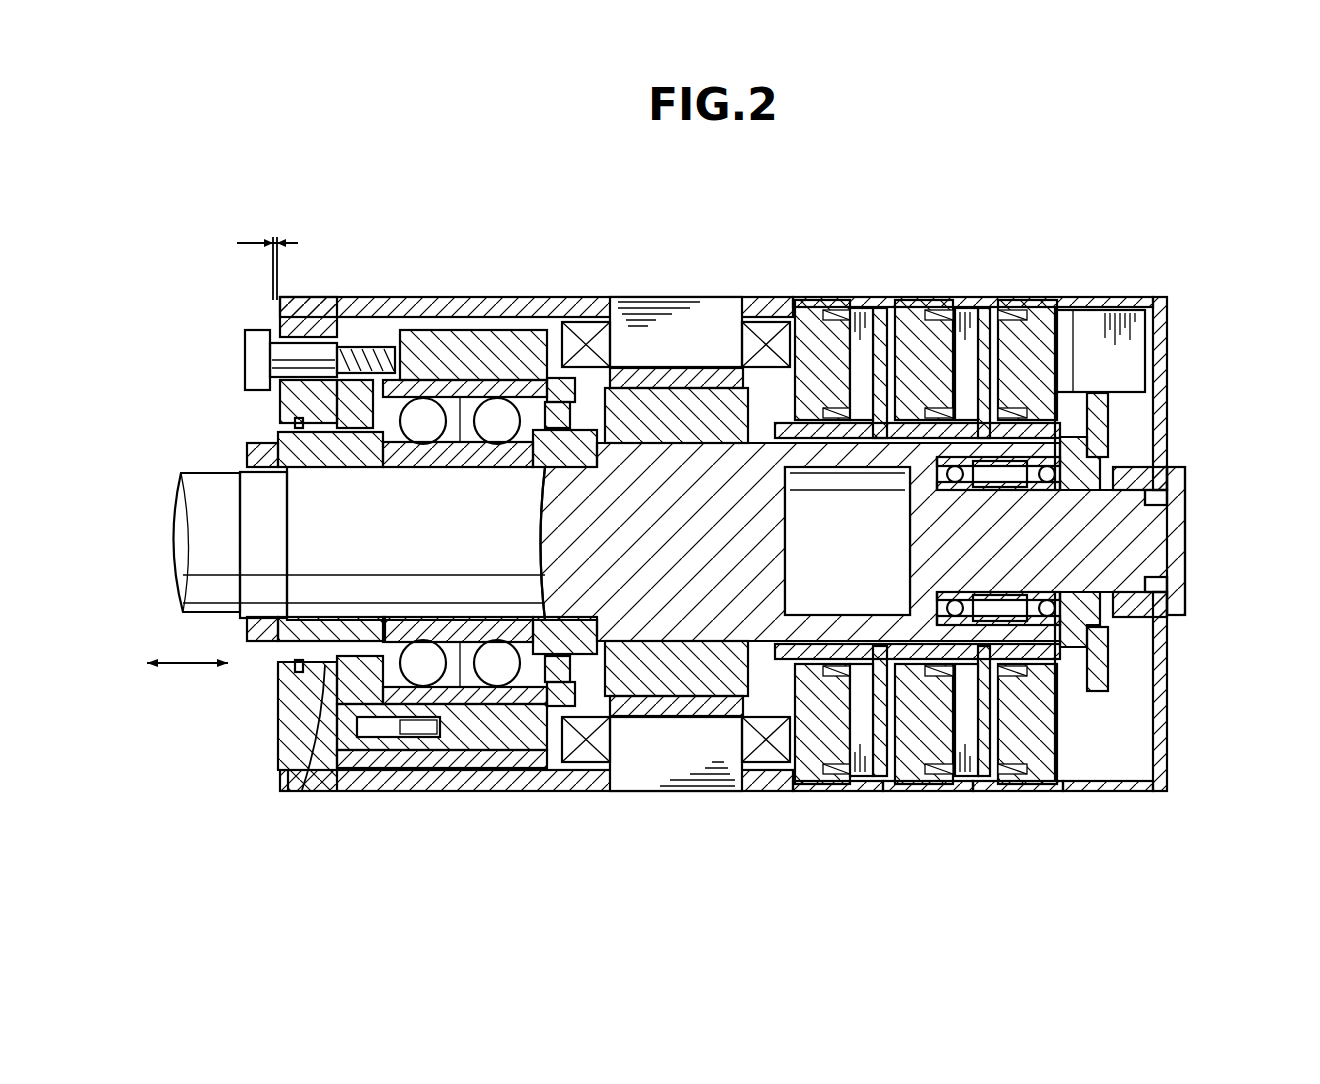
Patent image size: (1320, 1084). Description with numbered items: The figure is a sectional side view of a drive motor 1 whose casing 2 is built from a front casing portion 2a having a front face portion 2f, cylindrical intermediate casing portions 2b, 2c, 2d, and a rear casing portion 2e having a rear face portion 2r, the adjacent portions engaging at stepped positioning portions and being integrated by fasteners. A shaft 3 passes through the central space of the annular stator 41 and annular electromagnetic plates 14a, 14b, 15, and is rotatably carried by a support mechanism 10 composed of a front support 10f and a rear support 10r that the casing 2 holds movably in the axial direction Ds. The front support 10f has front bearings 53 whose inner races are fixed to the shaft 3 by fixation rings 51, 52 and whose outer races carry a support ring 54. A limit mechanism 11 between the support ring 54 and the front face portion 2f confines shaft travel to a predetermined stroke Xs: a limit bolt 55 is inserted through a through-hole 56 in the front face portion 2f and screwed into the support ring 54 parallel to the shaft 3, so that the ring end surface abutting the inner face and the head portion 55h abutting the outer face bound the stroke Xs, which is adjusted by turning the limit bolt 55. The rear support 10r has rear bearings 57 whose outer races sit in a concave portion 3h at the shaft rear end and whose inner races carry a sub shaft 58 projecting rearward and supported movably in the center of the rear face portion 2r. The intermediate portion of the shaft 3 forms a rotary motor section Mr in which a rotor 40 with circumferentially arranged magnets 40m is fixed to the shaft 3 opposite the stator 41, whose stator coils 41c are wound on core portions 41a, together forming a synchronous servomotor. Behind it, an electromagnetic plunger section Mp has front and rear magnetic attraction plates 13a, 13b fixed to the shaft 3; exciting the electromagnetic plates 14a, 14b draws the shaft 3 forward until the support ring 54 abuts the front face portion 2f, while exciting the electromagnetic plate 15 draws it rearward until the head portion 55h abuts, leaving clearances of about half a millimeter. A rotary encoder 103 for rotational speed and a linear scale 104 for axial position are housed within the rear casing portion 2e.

The drive motor 1 is at (1076, 270).
The casing 2 is at (513, 297).
The front casing portion 2a is at (425, 791).
The intermediate casing portion 2b is at (757, 791).
The intermediate casing portion 2c is at (876, 791).
The intermediate casing portion 2d is at (988, 791).
The rear casing portion 2e is at (1125, 791).
The front face portion 2f is at (277, 722).
The rear face portion 2r is at (1168, 710).
The shaft 3 is at (768, 659).
The concave portion 3h is at (843, 615).
The support mechanism 10 is at (510, 768).
The front support 10f is at (460, 768).
The rear support 10r is at (1186, 540).
The limit mechanism 11 is at (238, 332).
The front magnetic attraction plate 13a is at (882, 302).
The rear magnetic attraction plate 13b is at (985, 302).
The electromagnetic plate 14a is at (820, 784).
The electromagnetic plate 14b is at (918, 784).
The electromagnetic plate 15 is at (1041, 791).
The rotor 40 is at (750, 393).
The magnets 40m is at (716, 388).
The stator 41 is at (665, 296).
The core portions 41a is at (604, 330).
The stator coils 41c is at (776, 320).
The fixation ring 51 is at (302, 790).
The fixation ring 52 is at (628, 727).
The front bearings 53 is at (437, 378).
The support ring 54 is at (548, 297).
The limit bolt 55 is at (243, 353).
The head portion 55h is at (258, 390).
The through-hole 56 is at (300, 345).
The rear bearings 57 is at (1063, 474).
The sub shaft 58 is at (1166, 655).
The rotary encoder 103 is at (1145, 356).
The linear scale 104 is at (1110, 413).
The electromagnetic plunger section Mp is at (950, 291).
The rotary motor section Mr is at (665, 808).
The predetermined stroke Xs is at (262, 253).
The axial direction Ds is at (188, 666).